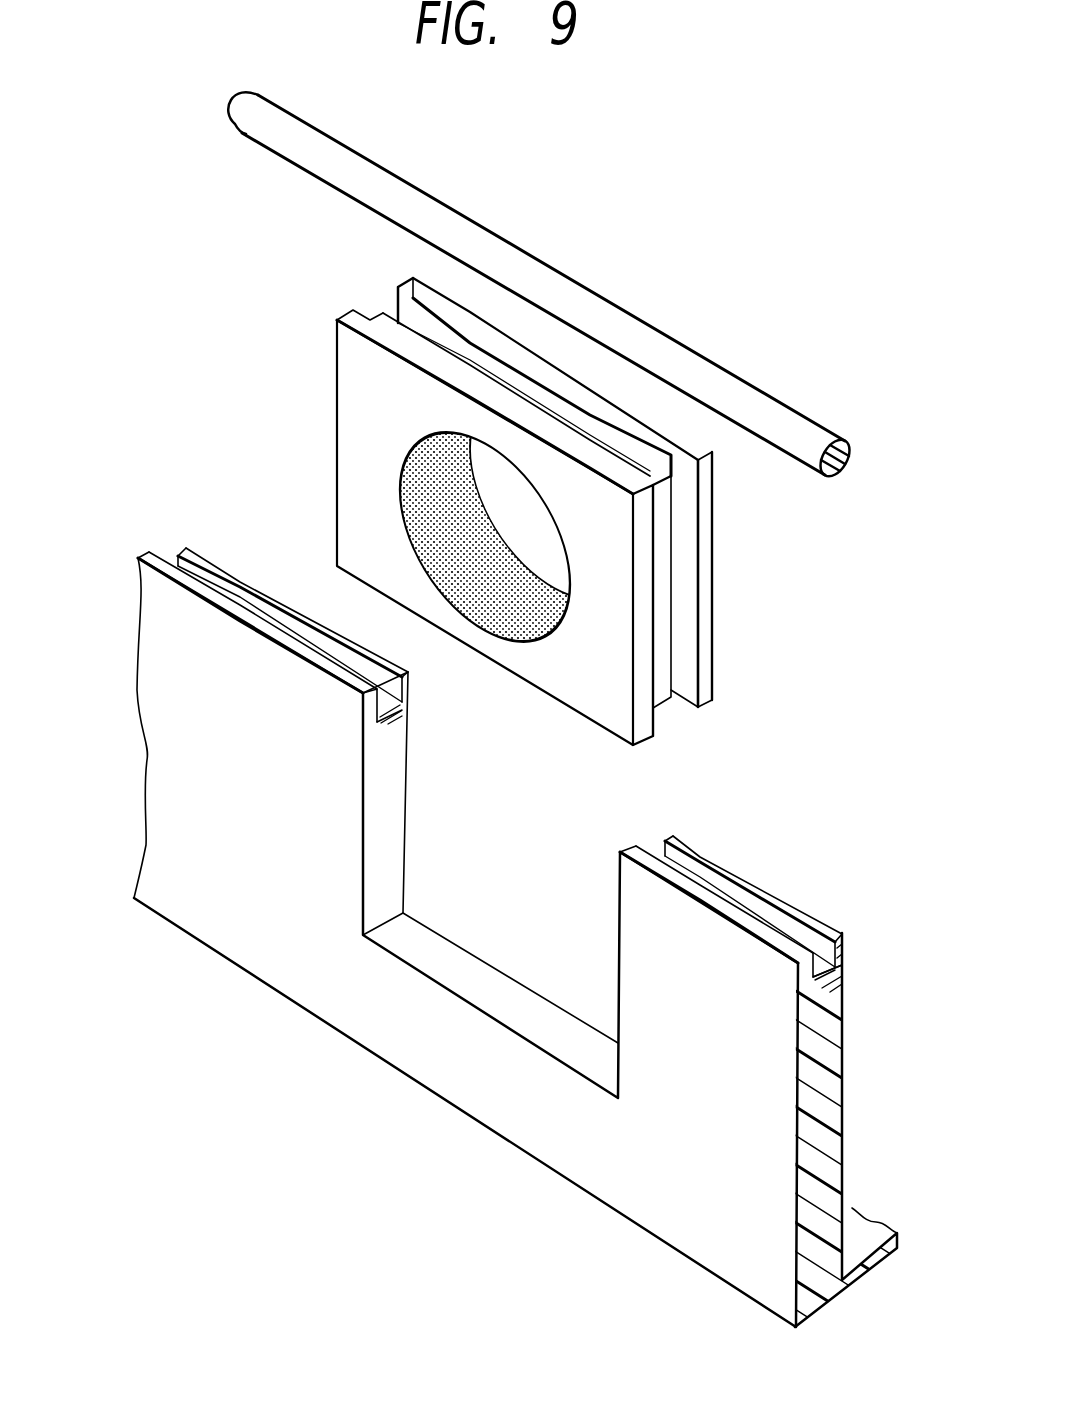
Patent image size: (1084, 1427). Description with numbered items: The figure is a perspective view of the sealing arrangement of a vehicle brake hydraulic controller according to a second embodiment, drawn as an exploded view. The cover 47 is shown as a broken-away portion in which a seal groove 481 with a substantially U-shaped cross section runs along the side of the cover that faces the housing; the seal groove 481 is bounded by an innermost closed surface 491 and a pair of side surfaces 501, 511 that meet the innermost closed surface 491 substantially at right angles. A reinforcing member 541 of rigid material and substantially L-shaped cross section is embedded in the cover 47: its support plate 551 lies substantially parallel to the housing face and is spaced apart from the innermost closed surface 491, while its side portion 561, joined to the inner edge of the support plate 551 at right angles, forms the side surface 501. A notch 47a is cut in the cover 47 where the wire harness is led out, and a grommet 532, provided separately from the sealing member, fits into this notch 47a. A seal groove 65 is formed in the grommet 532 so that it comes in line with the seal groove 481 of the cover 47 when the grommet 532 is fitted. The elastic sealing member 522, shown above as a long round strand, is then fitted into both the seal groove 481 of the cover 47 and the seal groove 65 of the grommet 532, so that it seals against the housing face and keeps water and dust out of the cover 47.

The cover 47 is at (420, 1064).
The notch 47a is at (499, 984).
The seal groove 481 is at (345, 698).
The innermost closed surface 491 is at (404, 726).
The side surface 501 is at (402, 688).
The side surface 511 is at (397, 745).
The sealing member 522 is at (730, 382).
The grommet 532 is at (338, 449).
The reinforcing member 541 is at (735, 850).
The support plate 551 is at (845, 993).
The side portion 561 is at (782, 890).
The seal groove 65 is at (553, 398).